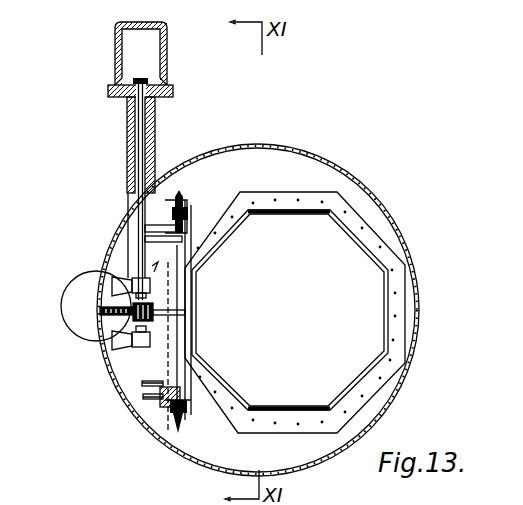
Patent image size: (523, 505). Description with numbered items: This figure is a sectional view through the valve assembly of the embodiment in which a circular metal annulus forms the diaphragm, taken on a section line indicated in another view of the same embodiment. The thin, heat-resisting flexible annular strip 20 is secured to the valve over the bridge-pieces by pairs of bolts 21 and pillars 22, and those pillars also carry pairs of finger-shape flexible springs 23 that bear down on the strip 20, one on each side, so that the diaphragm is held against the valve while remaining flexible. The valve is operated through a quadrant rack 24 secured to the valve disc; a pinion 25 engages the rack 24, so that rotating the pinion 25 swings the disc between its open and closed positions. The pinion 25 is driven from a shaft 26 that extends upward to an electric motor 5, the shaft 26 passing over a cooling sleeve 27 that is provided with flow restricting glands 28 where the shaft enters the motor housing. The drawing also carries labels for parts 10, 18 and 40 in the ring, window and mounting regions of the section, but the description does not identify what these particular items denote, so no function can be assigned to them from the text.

The electric motor 5 is at (148, 53).
The flow restricting glands 28 is at (158, 100).
The cooling sleeve 27 is at (143, 135).
The finger-shape flexible springs 23 is at (178, 207).
The bolts 21 is at (178, 213).
The annular strip 20 is at (177, 248).
The mounting plates 40 is at (148, 223).
The shaft 26 is at (141, 255).
The quadrant rack 24 is at (98, 312).
The pinion 25 is at (133, 318).
The pillars 22 is at (160, 382).
The window 18 is at (213, 398).
The ring 10 is at (390, 405).